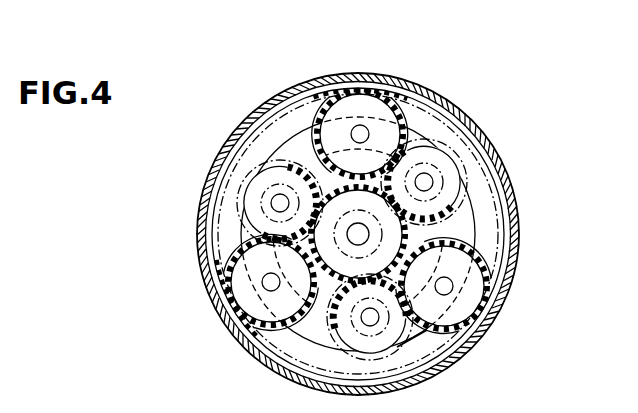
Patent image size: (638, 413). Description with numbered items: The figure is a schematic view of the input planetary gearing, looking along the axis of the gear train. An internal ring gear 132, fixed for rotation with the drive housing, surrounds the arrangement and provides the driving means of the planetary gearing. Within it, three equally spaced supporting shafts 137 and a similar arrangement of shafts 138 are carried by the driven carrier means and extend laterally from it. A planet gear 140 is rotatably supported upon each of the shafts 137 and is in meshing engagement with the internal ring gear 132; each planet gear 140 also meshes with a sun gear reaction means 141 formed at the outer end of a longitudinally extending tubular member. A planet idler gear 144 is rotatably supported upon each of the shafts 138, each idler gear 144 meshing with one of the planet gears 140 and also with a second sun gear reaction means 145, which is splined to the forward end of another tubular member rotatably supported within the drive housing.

The internal ring gear 132 is at (322, 90).
The supporting shafts 137 is at (374, 108).
The supporting shafts 138 is at (281, 195).
The planet gear 140 is at (405, 100).
The sun gear reaction means 141 is at (323, 312).
The planet idler gear 144 is at (467, 202).
The sun gear reaction means 145 is at (395, 222).